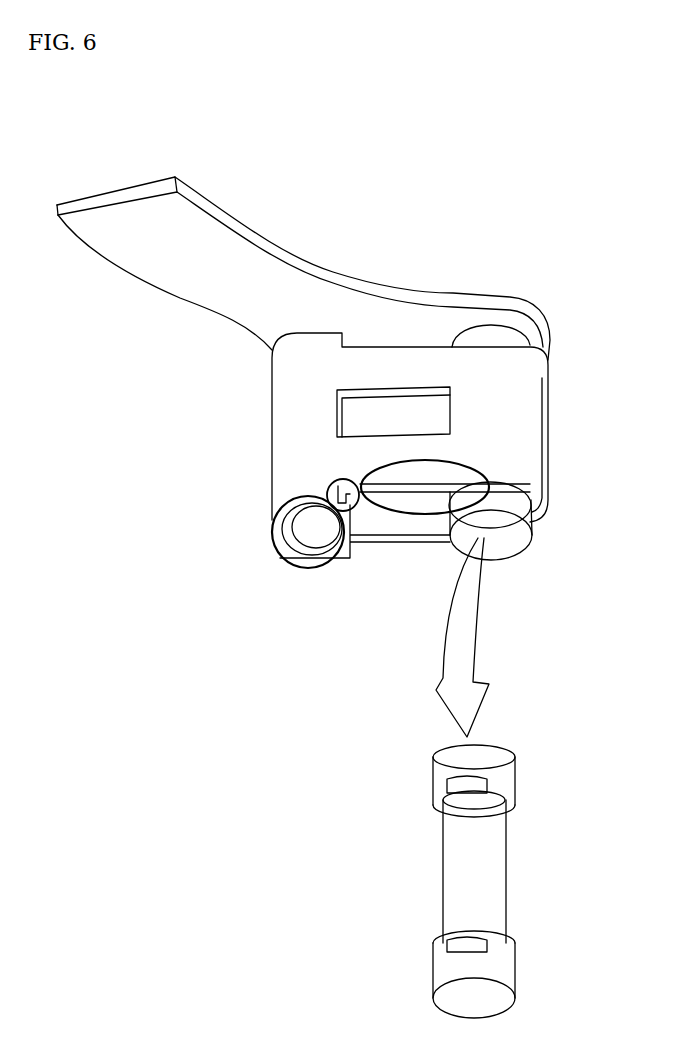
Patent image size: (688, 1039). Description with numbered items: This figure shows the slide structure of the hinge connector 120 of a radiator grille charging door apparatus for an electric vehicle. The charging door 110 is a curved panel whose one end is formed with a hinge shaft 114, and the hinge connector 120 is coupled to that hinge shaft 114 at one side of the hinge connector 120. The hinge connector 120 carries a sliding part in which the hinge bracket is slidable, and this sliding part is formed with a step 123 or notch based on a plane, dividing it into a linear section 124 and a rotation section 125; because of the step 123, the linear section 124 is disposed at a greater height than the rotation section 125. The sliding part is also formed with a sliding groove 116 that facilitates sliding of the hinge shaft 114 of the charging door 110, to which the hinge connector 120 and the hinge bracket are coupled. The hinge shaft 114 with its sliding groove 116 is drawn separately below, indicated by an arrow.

The charging door 110 is at (303, 262).
The hinge connector 120 is at (287, 378).
The step 123 is at (330, 490).
The linear section 124 is at (408, 517).
The rotation section 125 is at (293, 562).
The hinge shaft 114 is at (505, 968).
The sliding groove 116 is at (465, 944).